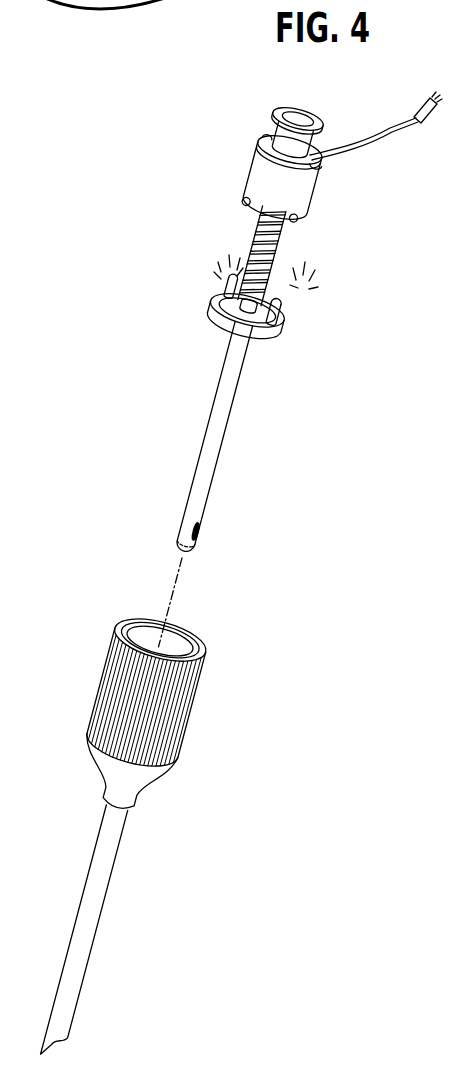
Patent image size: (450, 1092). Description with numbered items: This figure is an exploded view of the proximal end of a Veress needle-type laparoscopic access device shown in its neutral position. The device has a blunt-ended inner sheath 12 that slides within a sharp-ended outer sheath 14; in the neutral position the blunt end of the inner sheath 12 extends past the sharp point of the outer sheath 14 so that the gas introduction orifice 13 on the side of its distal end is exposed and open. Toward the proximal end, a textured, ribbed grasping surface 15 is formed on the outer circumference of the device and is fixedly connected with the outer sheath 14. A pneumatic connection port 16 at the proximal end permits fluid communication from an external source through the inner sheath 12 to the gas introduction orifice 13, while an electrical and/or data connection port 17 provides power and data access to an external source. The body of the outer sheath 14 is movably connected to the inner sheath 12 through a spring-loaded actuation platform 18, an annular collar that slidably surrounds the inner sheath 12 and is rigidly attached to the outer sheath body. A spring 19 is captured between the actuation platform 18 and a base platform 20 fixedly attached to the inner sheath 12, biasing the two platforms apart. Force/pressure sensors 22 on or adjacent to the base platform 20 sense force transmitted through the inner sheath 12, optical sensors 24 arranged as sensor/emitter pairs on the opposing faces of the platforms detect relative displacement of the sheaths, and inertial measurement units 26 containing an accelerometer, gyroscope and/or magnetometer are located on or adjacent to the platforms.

The inner sheath 12 is at (208, 415).
The gas introduction orifice 13 is at (205, 530).
The outer sheath 14 is at (40, 1013).
The grasping surface 15 is at (93, 670).
The pneumatic connection port 16 is at (283, 108).
The electrical and/or data connection port 17 is at (428, 125).
The spring-loaded actuation platform 18 is at (250, 162).
The spring 19 is at (262, 240).
The base platform 20 is at (208, 313).
The force/pressure sensors 22 is at (216, 300).
The optical sensors 24 is at (252, 200).
The inertial measurement units 26 is at (265, 138).